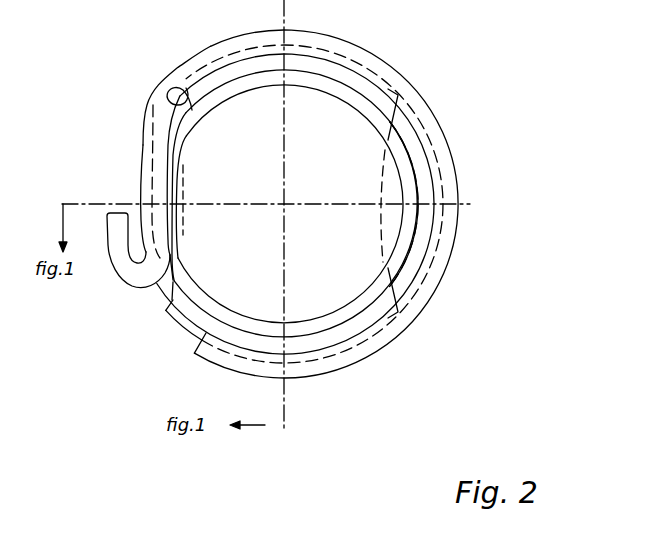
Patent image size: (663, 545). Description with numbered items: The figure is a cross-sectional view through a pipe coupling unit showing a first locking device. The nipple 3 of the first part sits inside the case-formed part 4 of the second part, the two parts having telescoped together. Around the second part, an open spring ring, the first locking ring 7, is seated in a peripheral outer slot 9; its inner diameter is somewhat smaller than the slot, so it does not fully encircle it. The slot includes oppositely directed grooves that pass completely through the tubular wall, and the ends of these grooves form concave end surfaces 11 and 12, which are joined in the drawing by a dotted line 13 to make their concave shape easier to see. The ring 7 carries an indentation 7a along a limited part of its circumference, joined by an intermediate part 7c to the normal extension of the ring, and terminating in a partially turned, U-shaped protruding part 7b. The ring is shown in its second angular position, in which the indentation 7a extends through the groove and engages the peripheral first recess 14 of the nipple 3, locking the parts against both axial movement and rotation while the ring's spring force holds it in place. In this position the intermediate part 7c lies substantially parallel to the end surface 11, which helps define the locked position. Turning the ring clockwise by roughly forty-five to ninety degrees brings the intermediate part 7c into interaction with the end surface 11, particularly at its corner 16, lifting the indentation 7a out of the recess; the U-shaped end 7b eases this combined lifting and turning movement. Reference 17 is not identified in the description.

The nipple 3 is at (392, 177).
The case-formed part 4 is at (172, 304).
The first locking ring 7 is at (384, 338).
The indentation 7a is at (142, 177).
The protruding part 7b is at (125, 262).
The intermediate part 7c is at (144, 139).
The peripheral outer slot 9 is at (202, 331).
The concave end surface 11 is at (167, 121).
The concave end surface 12 is at (170, 294).
The dotted line 13 is at (186, 176).
The peripheral first recess 14 is at (172, 278).
The corner 16 is at (186, 88).
The inner band line 17 is at (176, 289).